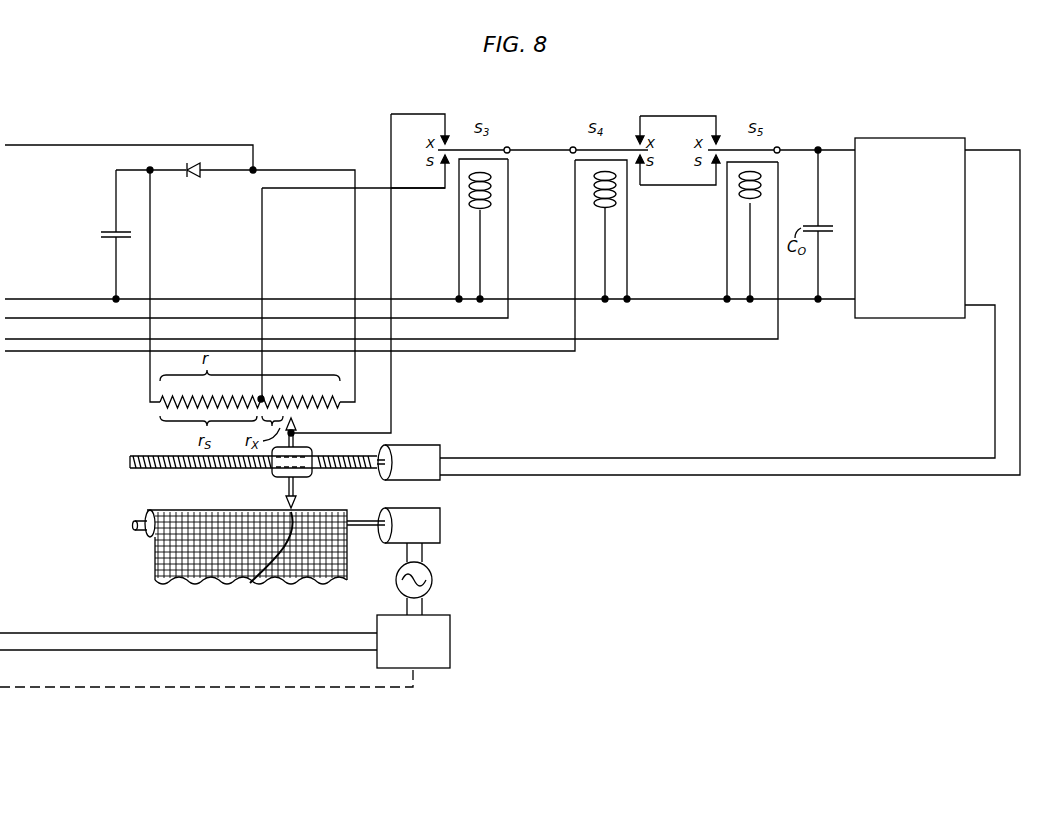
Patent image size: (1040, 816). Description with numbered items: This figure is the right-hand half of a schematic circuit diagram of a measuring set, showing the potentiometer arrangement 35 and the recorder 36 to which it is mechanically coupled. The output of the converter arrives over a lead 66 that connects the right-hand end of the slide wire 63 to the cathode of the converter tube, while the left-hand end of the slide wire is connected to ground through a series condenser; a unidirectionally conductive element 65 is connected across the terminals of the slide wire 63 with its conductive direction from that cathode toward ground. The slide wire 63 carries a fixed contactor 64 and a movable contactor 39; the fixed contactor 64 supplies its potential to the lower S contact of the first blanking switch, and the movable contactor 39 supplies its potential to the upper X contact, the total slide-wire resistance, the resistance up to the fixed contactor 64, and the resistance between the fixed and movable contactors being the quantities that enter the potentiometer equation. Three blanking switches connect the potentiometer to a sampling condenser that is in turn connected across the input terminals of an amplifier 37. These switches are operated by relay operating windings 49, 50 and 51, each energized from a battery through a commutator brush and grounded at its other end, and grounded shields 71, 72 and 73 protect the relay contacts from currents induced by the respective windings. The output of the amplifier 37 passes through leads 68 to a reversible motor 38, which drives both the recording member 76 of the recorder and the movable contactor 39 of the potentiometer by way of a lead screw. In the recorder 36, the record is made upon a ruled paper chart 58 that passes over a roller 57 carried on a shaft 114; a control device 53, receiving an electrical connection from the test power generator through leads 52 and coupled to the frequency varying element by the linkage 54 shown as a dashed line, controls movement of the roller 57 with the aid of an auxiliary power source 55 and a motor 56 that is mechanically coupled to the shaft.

The lead 66 is at (88, 145).
The unidirectionally conductive element 65 is at (196, 177).
The potentiometer arrangement 35 is at (230, 272).
The grounded shield 71 is at (506, 161).
The grounded shield 72 is at (588, 161).
The grounded shield 73 is at (766, 162).
The operating winding 49 is at (494, 196).
The operating winding 50 is at (613, 210).
The operating winding 51 is at (737, 197).
The amplifier 37 is at (910, 137).
The leads 68 is at (775, 460).
The reversible motor 38 is at (428, 448).
The slide wire 63 is at (160, 405).
The fixed contactor 64 is at (259, 399).
The movable contactor 39 is at (300, 418).
The recorder 36 is at (118, 502).
The recording member 76 is at (300, 494).
The drive shaft 114 is at (366, 521).
The motor 56 is at (437, 525).
The roller 57 is at (143, 534).
The ruled paper chart 58 is at (162, 566).
The auxiliary power source 55 is at (434, 573).
The control device 53 is at (452, 620).
The leads 52 is at (56, 633).
The linkage 54 is at (143, 688).